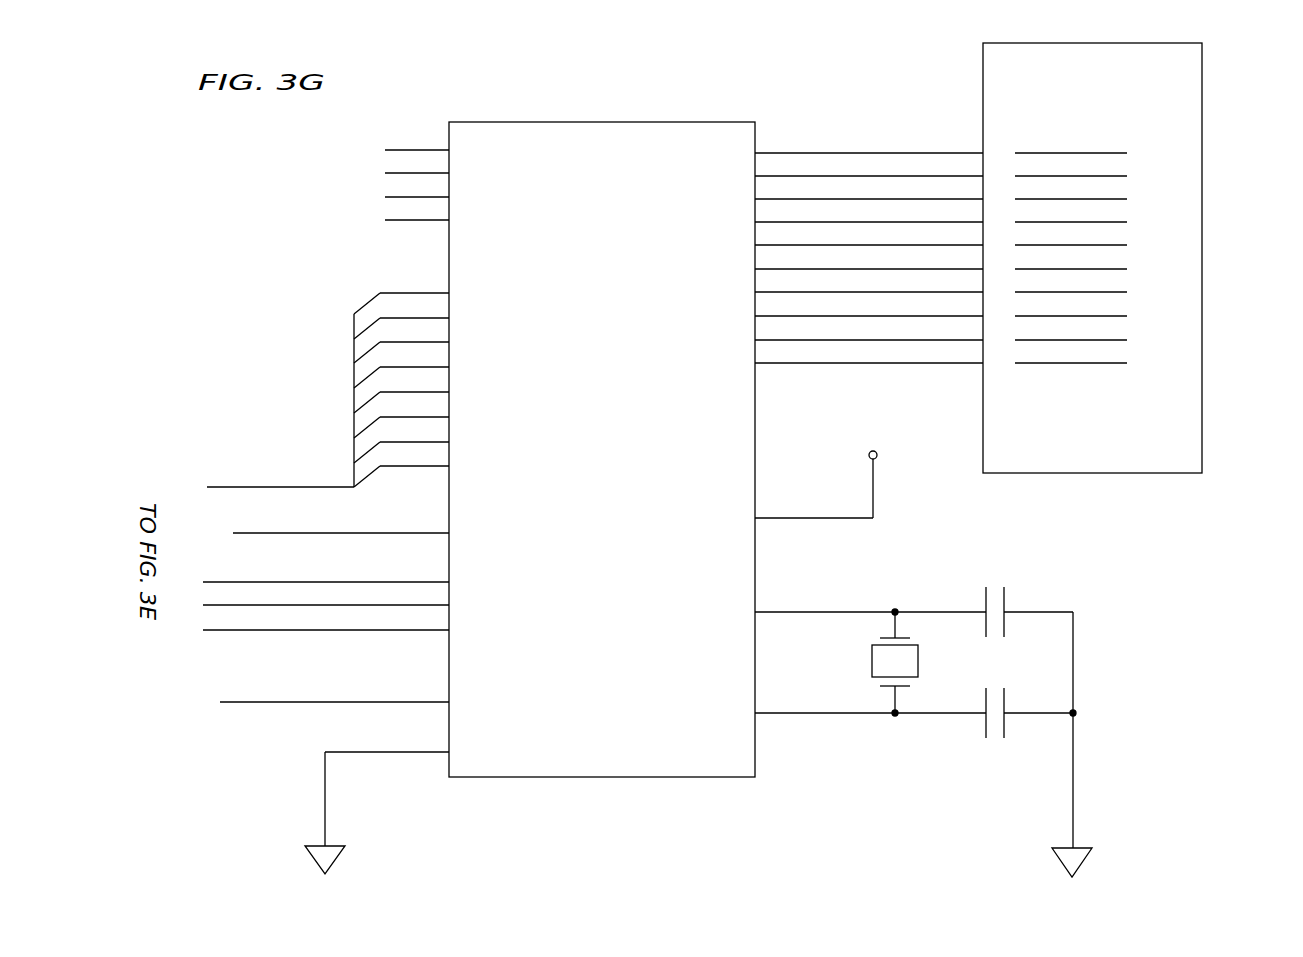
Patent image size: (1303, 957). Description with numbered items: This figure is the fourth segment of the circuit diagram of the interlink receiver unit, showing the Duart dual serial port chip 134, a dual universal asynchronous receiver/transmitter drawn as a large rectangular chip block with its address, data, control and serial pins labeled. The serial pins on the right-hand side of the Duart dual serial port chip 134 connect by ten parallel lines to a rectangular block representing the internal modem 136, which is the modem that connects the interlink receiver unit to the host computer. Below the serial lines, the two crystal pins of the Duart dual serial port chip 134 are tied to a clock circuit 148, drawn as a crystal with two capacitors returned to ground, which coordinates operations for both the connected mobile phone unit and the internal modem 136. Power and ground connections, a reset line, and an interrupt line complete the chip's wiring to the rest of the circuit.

The Duart dual serial port chip 134 is at (593, 479).
The internal modem 136 is at (1135, 258).
The clock circuit 148 is at (923, 728).